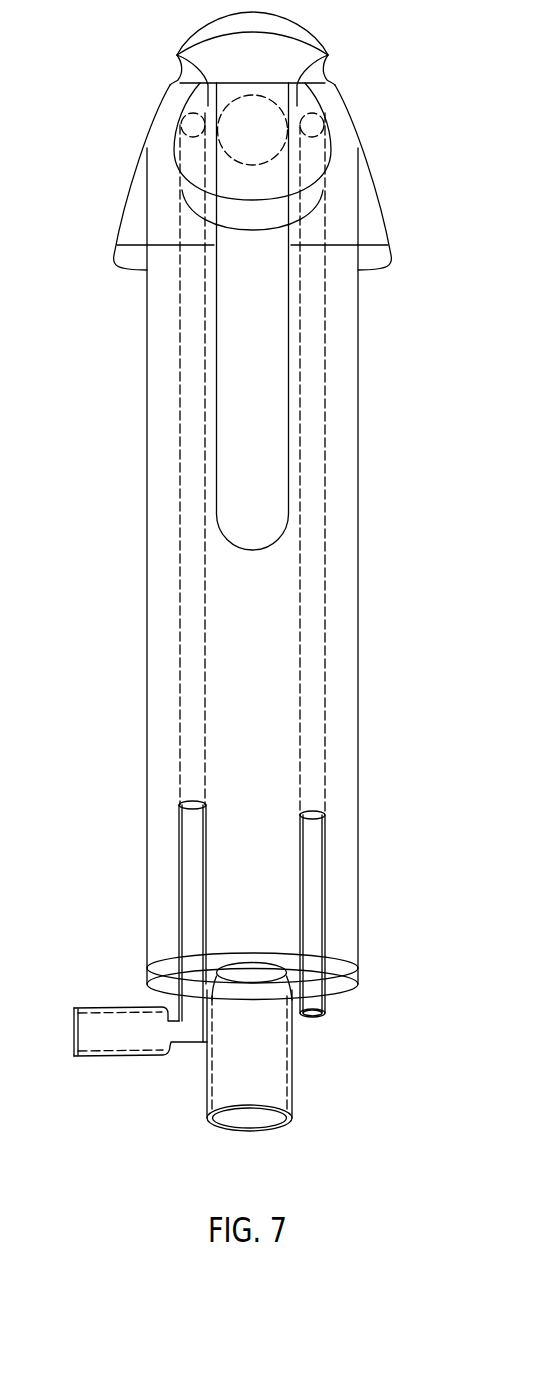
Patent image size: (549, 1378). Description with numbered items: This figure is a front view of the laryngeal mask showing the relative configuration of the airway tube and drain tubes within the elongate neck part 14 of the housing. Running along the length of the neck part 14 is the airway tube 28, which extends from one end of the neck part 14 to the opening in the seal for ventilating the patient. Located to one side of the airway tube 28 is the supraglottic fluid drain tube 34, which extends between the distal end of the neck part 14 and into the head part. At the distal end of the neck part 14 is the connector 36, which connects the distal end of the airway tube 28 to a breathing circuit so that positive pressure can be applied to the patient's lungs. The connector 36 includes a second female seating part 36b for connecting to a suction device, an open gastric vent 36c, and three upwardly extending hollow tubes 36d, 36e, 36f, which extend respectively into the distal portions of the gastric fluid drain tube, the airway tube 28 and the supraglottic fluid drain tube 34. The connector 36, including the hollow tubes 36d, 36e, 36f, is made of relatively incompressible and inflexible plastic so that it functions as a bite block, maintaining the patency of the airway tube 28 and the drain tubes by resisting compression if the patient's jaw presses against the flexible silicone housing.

The neck part 14 is at (390, 441).
The airway tube 28 is at (250, 392).
The supraglottic fluid drain tube 34 is at (182, 592).
The connector 36 is at (288, 1093).
The second female seating part 36b is at (87, 1060).
The open gastric vent 36c is at (312, 1020).
The hollow tube 36d is at (312, 882).
The hollow tube 36e is at (245, 737).
The hollow tube 36f is at (193, 880).